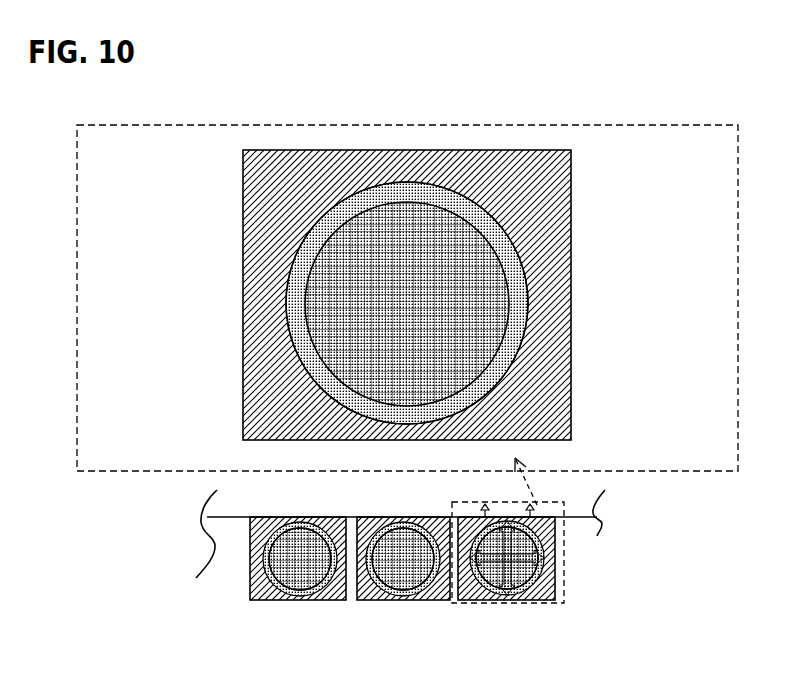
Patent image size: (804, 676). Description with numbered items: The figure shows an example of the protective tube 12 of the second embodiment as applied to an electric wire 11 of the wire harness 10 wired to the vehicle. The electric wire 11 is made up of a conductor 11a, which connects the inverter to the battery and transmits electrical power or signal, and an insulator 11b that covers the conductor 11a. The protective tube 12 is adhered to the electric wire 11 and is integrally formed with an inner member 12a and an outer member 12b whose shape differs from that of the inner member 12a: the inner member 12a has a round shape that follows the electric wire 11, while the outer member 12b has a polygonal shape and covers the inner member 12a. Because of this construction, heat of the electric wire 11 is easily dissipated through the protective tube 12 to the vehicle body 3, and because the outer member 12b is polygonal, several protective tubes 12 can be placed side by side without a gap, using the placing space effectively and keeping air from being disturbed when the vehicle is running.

The vehicle body 3 is at (237, 500).
The wire harness 10 is at (572, 602).
The electric wire 11 is at (500, 325).
The conductor 11a is at (660, 225).
The insulator 11b is at (528, 290).
The protective tube 12 is at (402, 295).
The inner member 12a is at (285, 302).
The outer member 12b is at (243, 218).